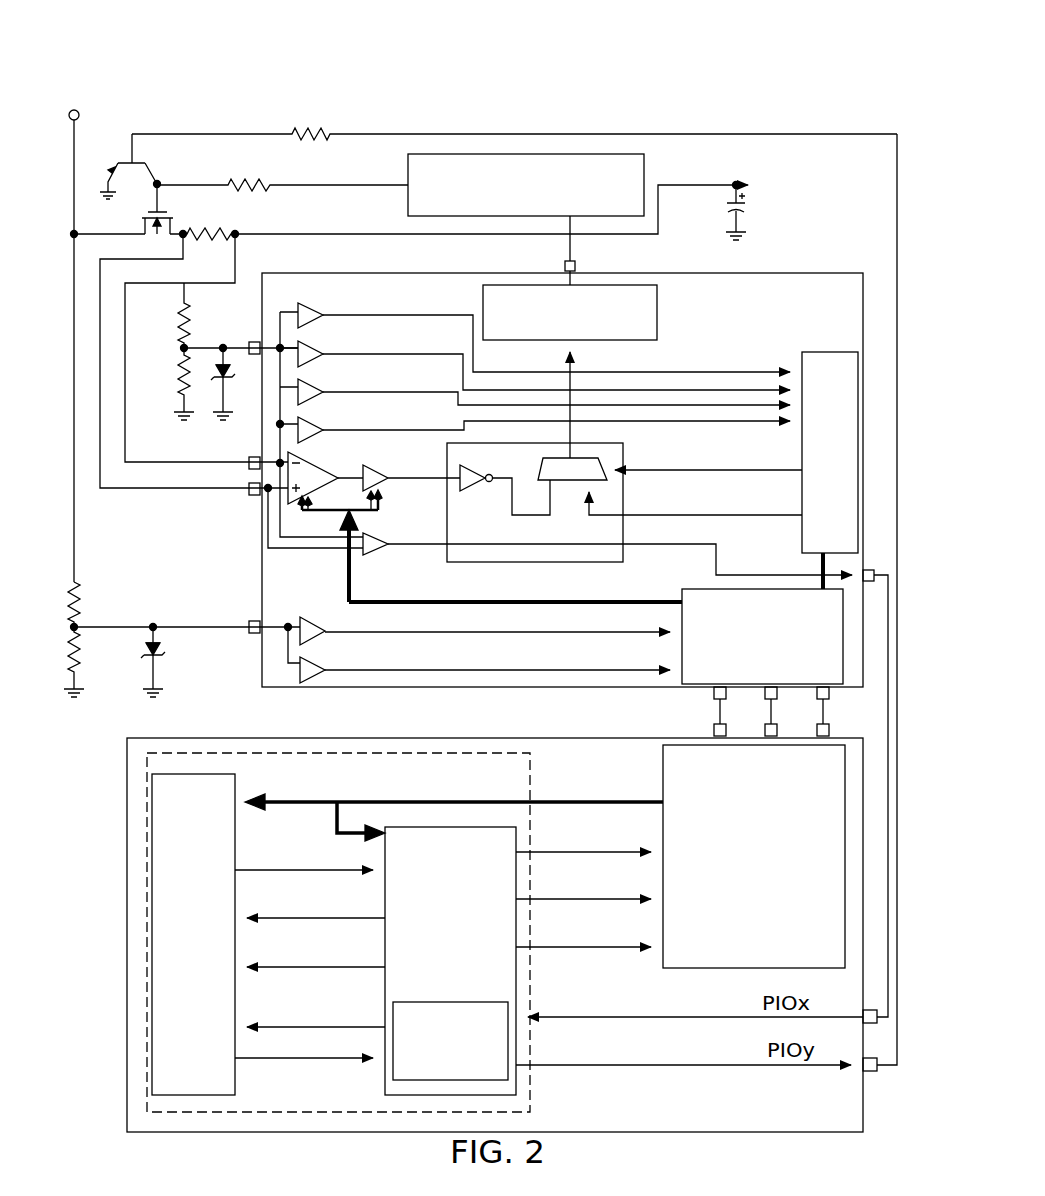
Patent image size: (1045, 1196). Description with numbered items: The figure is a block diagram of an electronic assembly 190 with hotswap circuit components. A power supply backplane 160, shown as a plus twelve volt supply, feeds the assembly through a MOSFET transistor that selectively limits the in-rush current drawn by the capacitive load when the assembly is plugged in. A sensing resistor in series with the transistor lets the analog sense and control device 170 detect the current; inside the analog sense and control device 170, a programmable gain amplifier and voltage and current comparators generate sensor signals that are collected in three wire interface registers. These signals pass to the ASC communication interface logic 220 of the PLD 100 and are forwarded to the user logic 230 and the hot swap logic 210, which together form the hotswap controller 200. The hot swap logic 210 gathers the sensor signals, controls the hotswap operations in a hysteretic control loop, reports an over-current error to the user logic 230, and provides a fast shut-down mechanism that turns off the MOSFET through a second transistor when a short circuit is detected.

The power supply backplane 160 is at (120, 91).
The electronic assembly 190 is at (795, 84).
The analog sense and control device 170 is at (850, 307).
The PLD 100 is at (112, 762).
The hotswap controller 200 is at (532, 1104).
The user logic 230 is at (210, 976).
The hot swap logic 210 is at (473, 926).
The ASC communication interface logic 220 is at (777, 921).